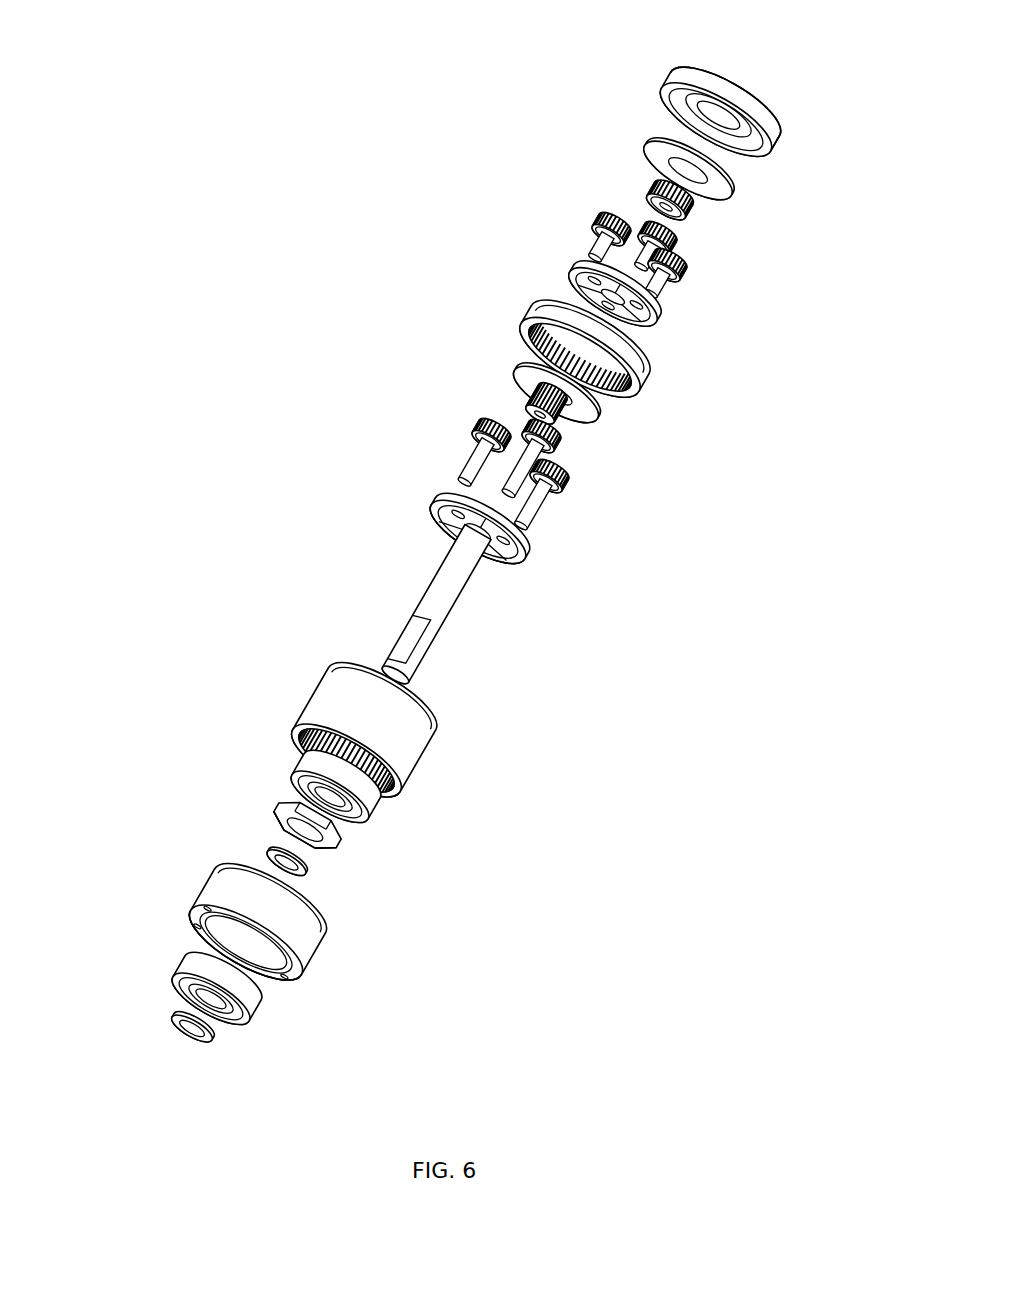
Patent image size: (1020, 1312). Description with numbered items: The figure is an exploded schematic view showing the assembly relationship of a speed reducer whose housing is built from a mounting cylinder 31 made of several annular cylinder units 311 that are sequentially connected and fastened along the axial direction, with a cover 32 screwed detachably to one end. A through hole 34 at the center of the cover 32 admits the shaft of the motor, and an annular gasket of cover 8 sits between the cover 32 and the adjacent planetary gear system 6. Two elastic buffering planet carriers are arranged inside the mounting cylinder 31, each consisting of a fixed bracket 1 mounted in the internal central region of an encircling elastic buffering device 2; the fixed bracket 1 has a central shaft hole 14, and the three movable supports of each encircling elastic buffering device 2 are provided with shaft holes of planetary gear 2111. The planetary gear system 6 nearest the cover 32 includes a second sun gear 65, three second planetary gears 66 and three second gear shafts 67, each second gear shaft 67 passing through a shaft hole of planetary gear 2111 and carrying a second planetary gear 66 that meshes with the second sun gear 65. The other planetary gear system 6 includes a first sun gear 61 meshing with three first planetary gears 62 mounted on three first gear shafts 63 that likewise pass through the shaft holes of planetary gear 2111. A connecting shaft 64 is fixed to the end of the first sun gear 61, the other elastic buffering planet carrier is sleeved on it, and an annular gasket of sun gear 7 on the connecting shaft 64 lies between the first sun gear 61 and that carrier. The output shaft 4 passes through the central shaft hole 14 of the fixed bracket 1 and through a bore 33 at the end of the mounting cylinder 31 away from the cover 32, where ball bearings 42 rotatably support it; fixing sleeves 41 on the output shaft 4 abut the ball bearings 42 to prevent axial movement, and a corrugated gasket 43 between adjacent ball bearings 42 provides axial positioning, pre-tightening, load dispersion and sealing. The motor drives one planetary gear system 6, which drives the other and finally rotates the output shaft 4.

The fixed bracket 1 is at (503, 560).
The encircling elastic buffering device 2 is at (657, 322).
The output shaft 4 is at (442, 600).
The planetary gear system 6 is at (824, 234).
The annular gasket of sun gear 7 is at (523, 380).
The annular gasket of cover 8 is at (647, 143).
The central shaft hole 14 is at (567, 287).
The mounting cylinder 31 is at (232, 880).
The cover 32 is at (692, 66).
The bore 33 is at (292, 968).
The through hole 34 is at (775, 138).
The fixing sleeve 41 is at (275, 835).
The ball bearing 42 is at (347, 787).
The corrugated gasket 43 is at (307, 858).
The first sun gear 61 is at (563, 433).
The first planetary gear 62 is at (565, 482).
The first gear shaft 63 is at (540, 510).
The connecting shaft 64 is at (570, 411).
The second sun gear 65 is at (697, 204).
The second planetary gear 66 is at (678, 247).
The second gear shaft 67 is at (680, 279).
The annular cylinder unit 311 is at (537, 307).
The shaft hole of planetary gear 2111 is at (582, 283).